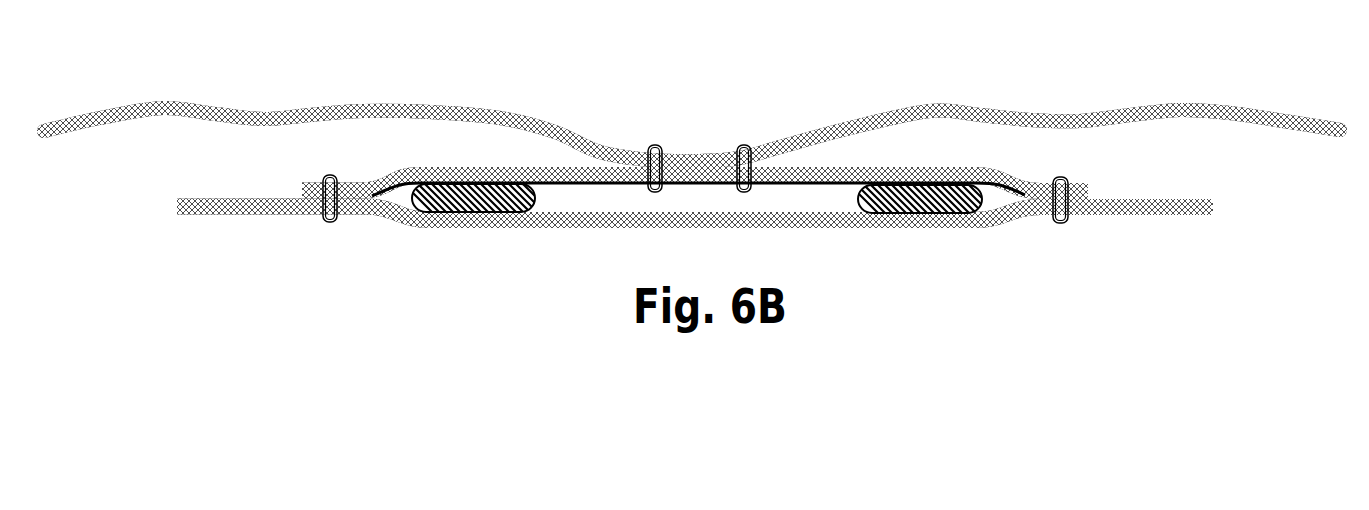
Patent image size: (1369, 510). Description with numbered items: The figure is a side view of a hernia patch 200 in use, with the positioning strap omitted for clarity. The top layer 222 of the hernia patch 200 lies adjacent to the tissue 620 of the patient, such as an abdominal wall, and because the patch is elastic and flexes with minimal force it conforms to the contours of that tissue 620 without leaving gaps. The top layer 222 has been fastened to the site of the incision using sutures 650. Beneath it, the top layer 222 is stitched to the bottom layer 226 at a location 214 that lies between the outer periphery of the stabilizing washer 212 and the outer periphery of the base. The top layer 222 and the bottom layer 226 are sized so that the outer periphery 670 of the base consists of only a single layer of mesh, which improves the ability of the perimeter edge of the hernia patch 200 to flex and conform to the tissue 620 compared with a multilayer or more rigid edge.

The hernia patch 200 is at (1232, 333).
The stabilizing washer 212 is at (485, 214).
The stitching location 214 is at (326, 223).
The top layer 222 is at (380, 203).
The bottom layer 226 is at (997, 229).
The tissue 620 is at (1220, 120).
The sutures 650 is at (742, 150).
The outer periphery of the base 670 is at (177, 195).